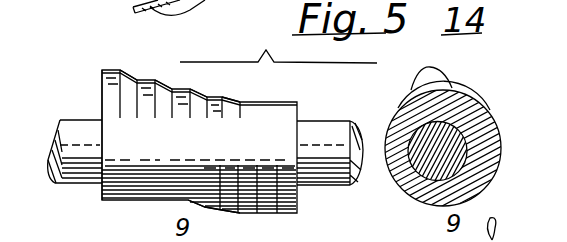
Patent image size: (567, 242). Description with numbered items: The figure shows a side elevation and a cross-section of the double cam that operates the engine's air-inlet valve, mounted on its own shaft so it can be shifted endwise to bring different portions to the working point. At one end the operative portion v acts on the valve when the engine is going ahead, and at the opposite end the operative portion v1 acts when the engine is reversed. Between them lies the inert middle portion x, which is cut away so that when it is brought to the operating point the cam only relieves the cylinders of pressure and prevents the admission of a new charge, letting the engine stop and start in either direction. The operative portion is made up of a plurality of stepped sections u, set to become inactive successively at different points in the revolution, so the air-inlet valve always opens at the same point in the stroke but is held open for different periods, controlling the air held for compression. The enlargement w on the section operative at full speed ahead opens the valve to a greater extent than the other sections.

The operative portion for going ahead v is at (199, 141).
The inert middle portion x is at (202, 142).
The operative portion for reversing v1 is at (271, 149).
The cam sections u is at (207, 92).
The enlargement of the cam section w is at (102, 92).
The shaft y is at (342, 119).